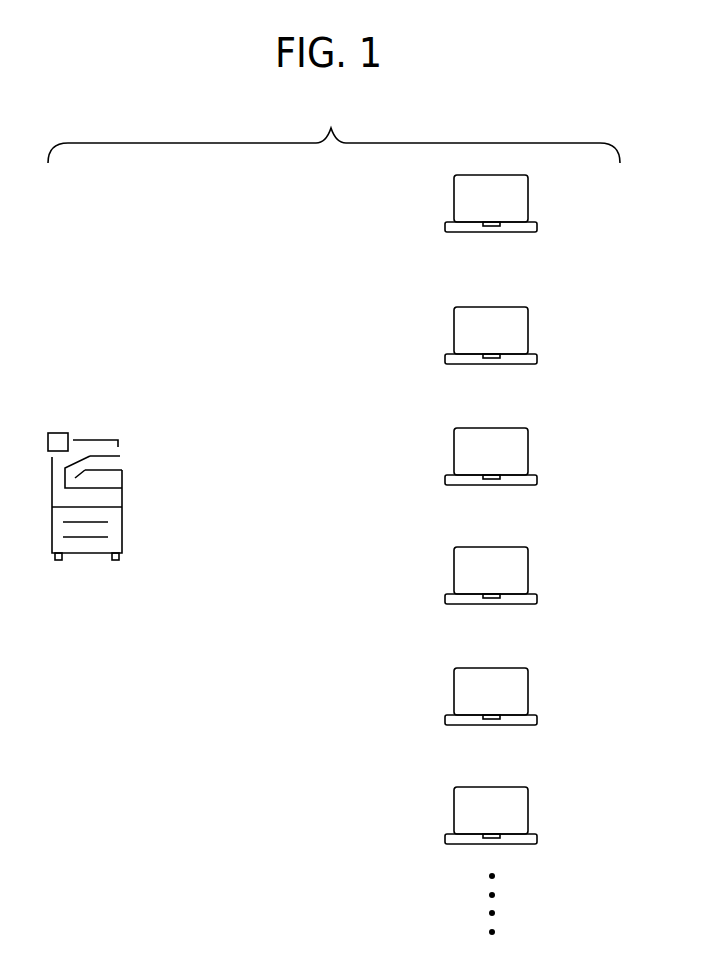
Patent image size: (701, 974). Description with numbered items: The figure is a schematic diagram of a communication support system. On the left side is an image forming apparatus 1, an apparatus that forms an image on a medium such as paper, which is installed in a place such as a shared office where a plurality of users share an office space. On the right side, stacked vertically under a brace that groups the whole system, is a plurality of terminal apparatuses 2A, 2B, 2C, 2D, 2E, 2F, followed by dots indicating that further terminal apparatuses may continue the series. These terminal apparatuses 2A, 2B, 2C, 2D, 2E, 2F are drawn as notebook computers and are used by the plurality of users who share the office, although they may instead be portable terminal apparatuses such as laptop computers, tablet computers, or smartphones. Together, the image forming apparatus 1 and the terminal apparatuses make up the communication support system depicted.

The image forming apparatus 1 is at (109, 395).
The terminal apparatus 2A is at (528, 203).
The terminal apparatus 2B is at (528, 335).
The terminal apparatus 2C is at (528, 456).
The terminal apparatus 2D is at (528, 575).
The terminal apparatus 2E is at (528, 696).
The terminal apparatus 2F is at (528, 815).